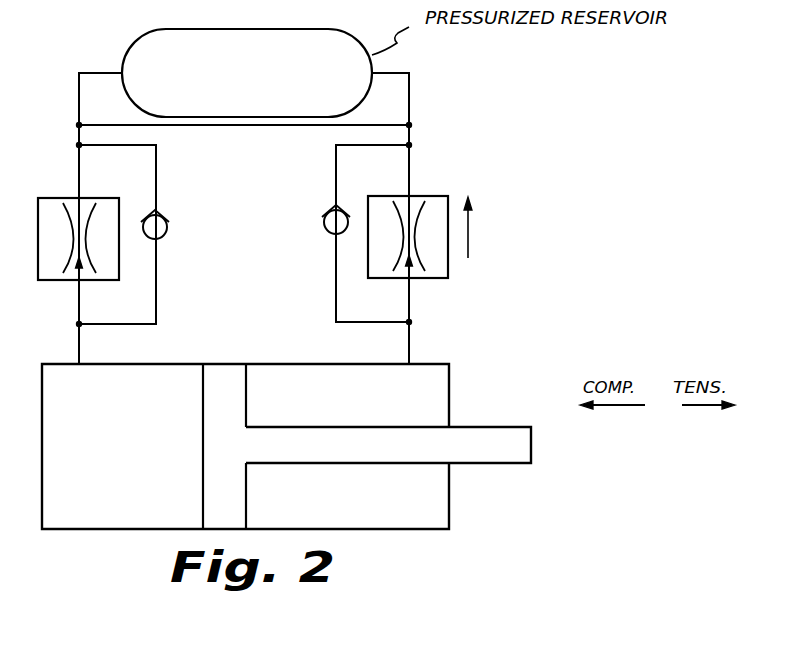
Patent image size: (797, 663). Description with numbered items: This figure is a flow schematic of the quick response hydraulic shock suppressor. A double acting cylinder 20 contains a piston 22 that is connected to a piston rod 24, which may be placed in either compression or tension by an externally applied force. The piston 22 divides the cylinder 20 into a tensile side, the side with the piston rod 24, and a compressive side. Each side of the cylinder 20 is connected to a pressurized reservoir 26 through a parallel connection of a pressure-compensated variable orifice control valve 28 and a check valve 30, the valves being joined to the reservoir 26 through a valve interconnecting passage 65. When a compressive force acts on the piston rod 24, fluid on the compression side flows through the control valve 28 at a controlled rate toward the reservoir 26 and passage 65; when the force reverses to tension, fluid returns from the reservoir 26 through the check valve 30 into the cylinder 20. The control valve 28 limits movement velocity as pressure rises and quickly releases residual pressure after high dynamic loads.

The double acting cylinder 20 is at (405, 529).
The piston 22 is at (247, 393).
The piston rod 24 is at (328, 427).
The pressurized reservoir 26 is at (252, 76).
The variable orifice control valve 28 is at (57, 282).
The check valve 30 is at (167, 229).
The valve interconnecting passage 65 is at (390, 125).